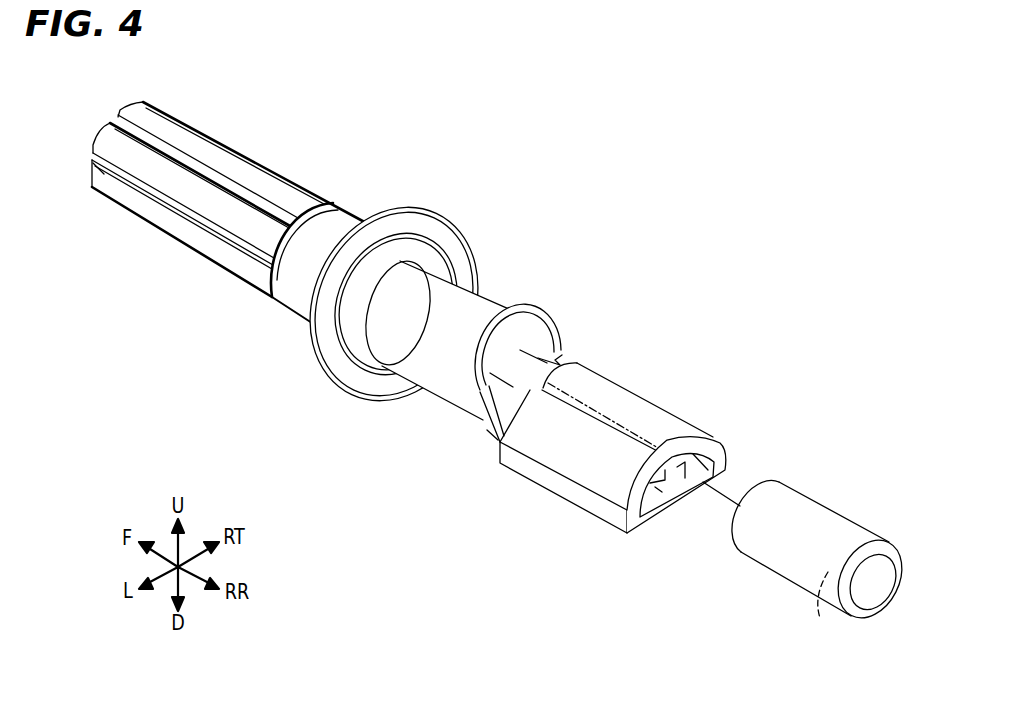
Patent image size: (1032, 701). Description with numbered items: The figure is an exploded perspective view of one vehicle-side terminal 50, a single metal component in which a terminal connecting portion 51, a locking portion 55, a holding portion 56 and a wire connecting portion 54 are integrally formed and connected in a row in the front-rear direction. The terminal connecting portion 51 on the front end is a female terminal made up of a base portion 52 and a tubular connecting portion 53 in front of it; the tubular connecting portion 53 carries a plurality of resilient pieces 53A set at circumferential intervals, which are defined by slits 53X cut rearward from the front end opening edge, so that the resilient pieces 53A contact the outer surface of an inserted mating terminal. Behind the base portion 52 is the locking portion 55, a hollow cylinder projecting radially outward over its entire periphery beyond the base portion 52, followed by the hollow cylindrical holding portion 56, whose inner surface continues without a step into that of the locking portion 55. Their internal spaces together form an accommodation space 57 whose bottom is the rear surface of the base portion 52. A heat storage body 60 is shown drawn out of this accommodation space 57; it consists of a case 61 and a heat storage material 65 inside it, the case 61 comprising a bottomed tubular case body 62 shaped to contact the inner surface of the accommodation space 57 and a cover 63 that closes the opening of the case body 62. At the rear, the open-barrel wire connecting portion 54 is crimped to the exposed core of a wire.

The vehicle-side terminal 50 is at (421, 310).
The terminal connecting portion 51 is at (245, 253).
The base portion 52 is at (277, 140).
The tubular connecting portion 53 is at (245, 261).
The resilient pieces 53A is at (138, 166).
The slits 53X is at (227, 219).
The wire connecting portion 54 is at (600, 416).
The locking portion 55 is at (403, 215).
The holding portion 56 is at (502, 307).
The accommodation space 57 is at (551, 344).
The heat storage body 60 is at (825, 534).
The case 61 is at (864, 525).
The case body 62 is at (825, 528).
The cover 63 is at (874, 542).
The heat storage material 65 is at (793, 586).